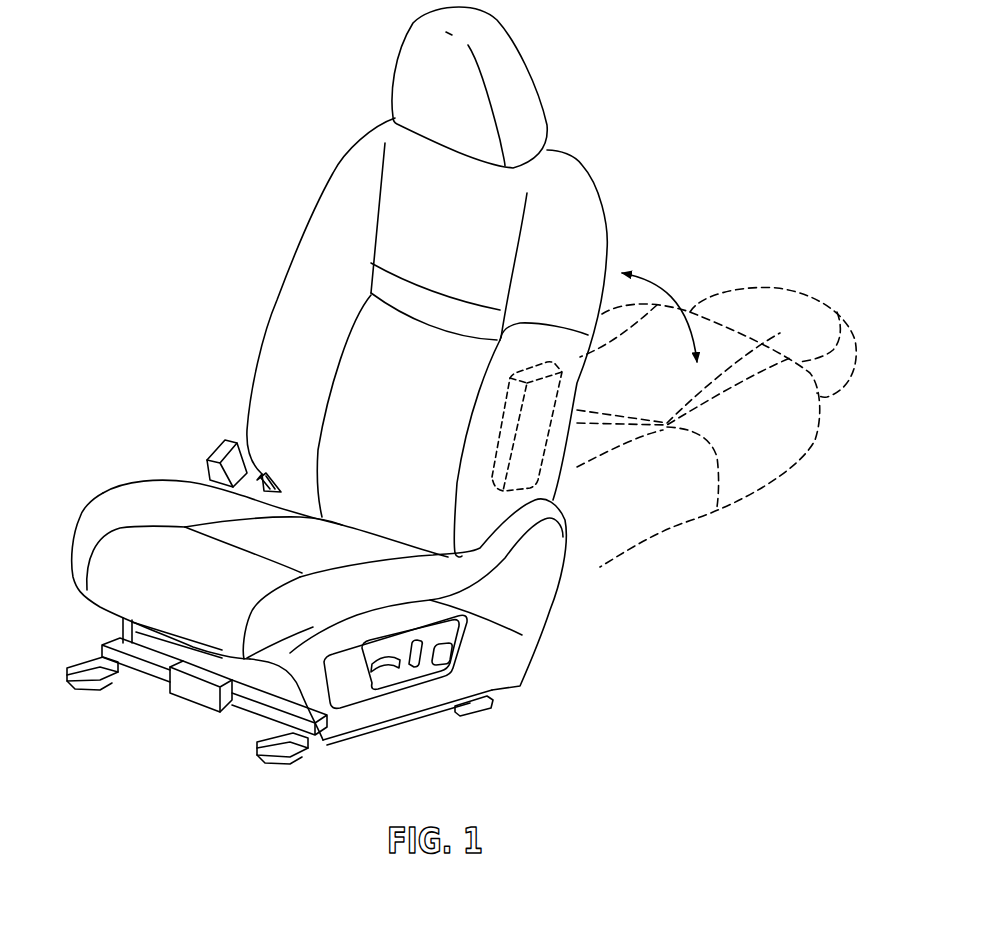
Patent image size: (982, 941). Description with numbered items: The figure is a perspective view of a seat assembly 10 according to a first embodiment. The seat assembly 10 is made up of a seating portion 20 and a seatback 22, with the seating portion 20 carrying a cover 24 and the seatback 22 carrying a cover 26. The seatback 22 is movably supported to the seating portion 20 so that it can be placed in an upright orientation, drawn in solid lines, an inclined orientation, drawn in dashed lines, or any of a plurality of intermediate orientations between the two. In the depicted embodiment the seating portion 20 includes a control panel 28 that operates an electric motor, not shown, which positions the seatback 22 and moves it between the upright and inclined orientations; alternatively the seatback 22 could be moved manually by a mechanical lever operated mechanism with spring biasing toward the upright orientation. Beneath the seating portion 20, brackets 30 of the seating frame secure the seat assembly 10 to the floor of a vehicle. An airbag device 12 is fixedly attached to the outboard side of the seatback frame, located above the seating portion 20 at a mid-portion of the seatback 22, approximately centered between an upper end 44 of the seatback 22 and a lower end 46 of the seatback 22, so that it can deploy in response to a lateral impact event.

The seat assembly 10 is at (286, 131).
The airbag device 12 is at (503, 408).
The seating portion 20 is at (106, 491).
The seatback 22 is at (276, 302).
The cover 24 is at (157, 507).
The cover 26 is at (343, 222).
The control panel 28 is at (395, 677).
The brackets 30 is at (100, 678).
The upper end of the seatback 44 is at (567, 157).
The lower end of the seatback 46 is at (385, 538).